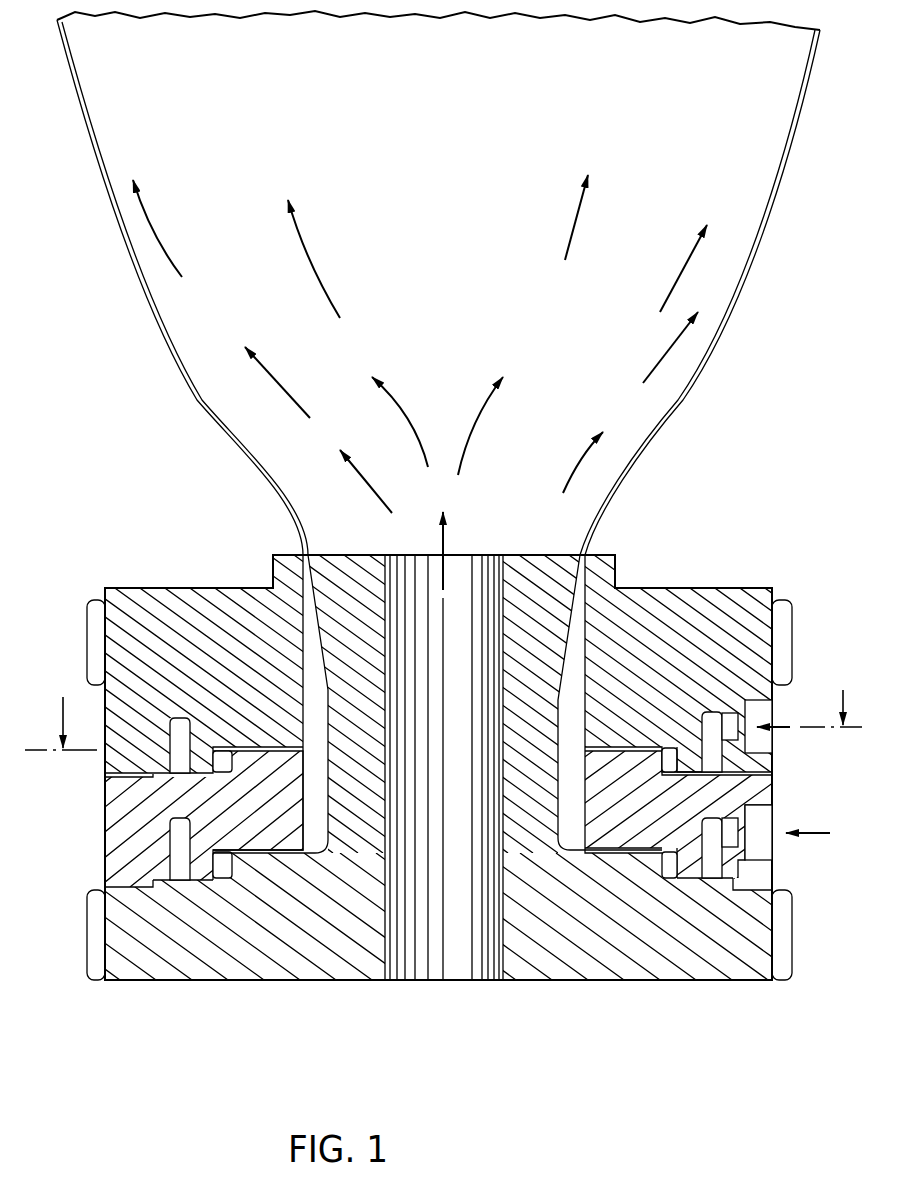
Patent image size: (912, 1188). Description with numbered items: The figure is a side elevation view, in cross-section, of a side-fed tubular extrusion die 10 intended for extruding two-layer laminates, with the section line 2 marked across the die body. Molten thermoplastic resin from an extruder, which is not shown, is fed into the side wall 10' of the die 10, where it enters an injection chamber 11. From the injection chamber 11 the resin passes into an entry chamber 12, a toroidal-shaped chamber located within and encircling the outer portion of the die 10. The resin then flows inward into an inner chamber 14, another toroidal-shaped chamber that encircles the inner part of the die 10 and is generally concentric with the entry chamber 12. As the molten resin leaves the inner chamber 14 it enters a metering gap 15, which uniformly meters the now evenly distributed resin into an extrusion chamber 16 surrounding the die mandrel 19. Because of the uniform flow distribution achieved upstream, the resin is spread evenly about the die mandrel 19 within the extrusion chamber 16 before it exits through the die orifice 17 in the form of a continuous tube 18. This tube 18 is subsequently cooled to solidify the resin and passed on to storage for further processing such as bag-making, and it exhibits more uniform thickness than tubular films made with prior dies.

The tubular extrusion die 10 is at (456, 767).
The side wall 10' is at (456, 819).
The injection chamber 11 is at (760, 714).
The entry chamber 12 is at (181, 719).
The inner chamber 14 is at (671, 745).
The metering gap 15 is at (234, 747).
The extrusion chamber 16 is at (315, 665).
The die orifice 17 is at (584, 554).
The continuous tube 18 is at (142, 298).
The die mandrel 19 is at (561, 706).
The section line 2- 2 is at (443, 700).